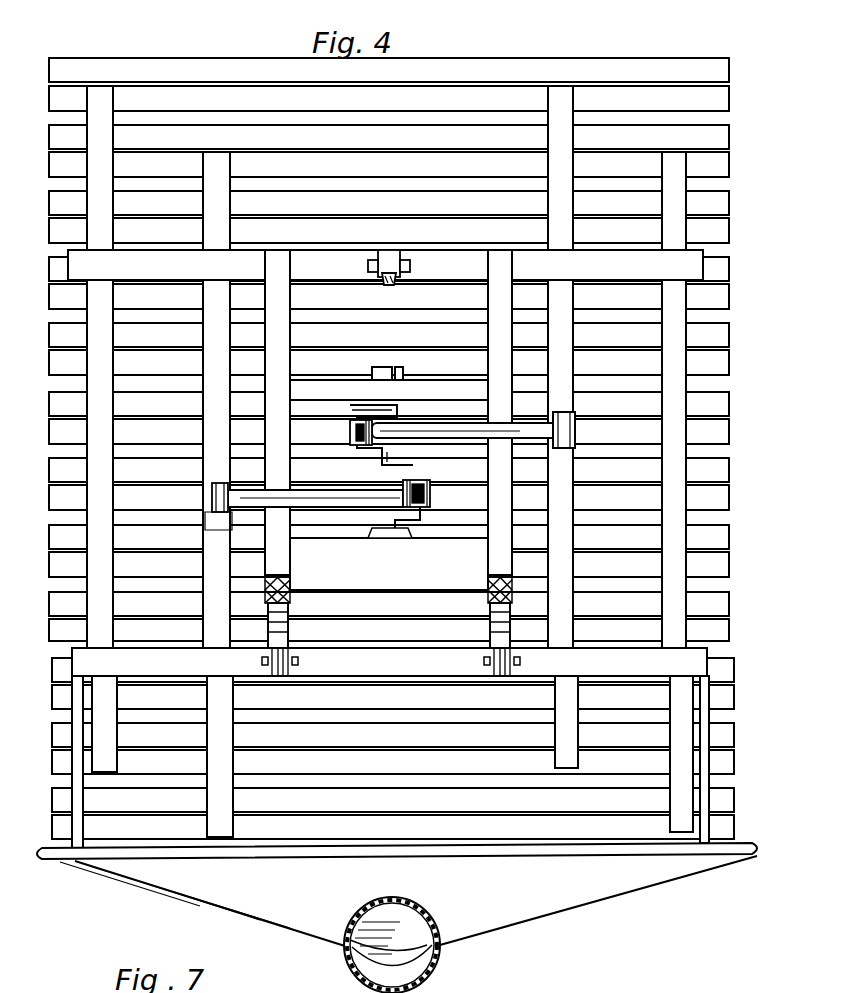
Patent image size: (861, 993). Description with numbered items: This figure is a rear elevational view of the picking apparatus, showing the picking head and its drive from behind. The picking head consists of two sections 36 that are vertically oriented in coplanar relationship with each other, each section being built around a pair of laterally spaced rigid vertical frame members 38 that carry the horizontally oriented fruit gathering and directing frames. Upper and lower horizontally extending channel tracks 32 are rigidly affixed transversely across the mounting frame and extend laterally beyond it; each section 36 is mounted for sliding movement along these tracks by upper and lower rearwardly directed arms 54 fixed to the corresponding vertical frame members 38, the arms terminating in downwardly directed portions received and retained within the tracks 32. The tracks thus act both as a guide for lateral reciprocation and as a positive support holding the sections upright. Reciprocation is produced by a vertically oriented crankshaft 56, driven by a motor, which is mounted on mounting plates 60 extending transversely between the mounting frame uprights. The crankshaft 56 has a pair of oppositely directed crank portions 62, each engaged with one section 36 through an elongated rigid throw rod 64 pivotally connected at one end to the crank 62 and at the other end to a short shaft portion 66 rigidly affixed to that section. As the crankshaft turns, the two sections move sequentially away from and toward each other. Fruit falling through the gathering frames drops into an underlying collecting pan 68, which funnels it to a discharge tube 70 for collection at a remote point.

The channel track 32 is at (700, 268).
The section 36 is at (621, 127).
The vertical frame member 38 is at (565, 497).
The rearwardly directed arm 54 is at (218, 235).
The crankshaft 56 is at (364, 465).
The mounting plate 60 is at (447, 387).
The crank portion 62 is at (352, 417).
The throw rod 64 is at (533, 427).
The short shaft portion 66 is at (212, 495).
The collecting pan 68 is at (566, 893).
The discharge tube 70 is at (424, 974).